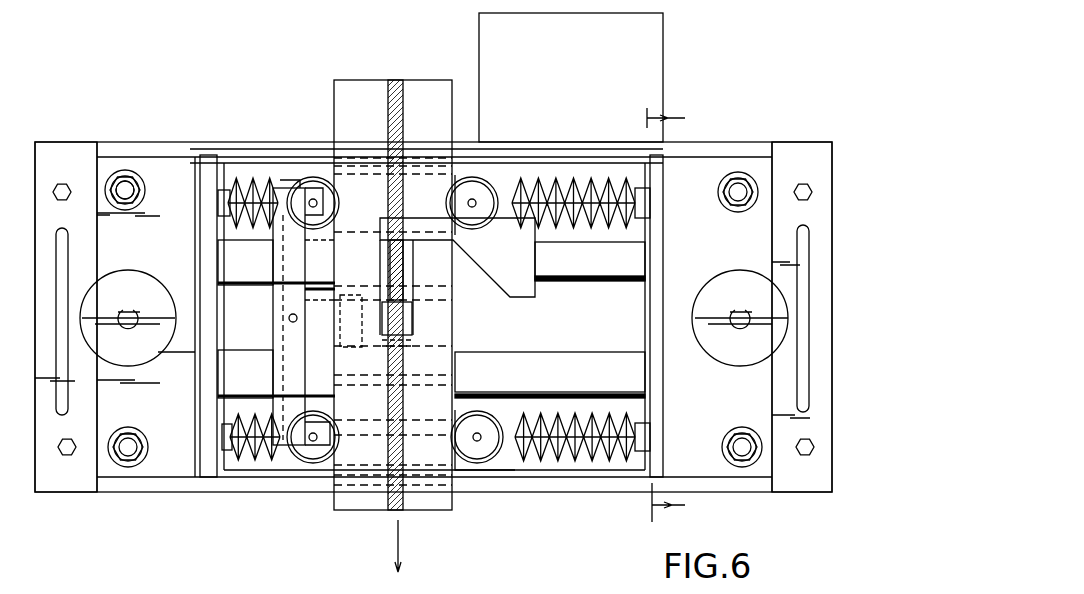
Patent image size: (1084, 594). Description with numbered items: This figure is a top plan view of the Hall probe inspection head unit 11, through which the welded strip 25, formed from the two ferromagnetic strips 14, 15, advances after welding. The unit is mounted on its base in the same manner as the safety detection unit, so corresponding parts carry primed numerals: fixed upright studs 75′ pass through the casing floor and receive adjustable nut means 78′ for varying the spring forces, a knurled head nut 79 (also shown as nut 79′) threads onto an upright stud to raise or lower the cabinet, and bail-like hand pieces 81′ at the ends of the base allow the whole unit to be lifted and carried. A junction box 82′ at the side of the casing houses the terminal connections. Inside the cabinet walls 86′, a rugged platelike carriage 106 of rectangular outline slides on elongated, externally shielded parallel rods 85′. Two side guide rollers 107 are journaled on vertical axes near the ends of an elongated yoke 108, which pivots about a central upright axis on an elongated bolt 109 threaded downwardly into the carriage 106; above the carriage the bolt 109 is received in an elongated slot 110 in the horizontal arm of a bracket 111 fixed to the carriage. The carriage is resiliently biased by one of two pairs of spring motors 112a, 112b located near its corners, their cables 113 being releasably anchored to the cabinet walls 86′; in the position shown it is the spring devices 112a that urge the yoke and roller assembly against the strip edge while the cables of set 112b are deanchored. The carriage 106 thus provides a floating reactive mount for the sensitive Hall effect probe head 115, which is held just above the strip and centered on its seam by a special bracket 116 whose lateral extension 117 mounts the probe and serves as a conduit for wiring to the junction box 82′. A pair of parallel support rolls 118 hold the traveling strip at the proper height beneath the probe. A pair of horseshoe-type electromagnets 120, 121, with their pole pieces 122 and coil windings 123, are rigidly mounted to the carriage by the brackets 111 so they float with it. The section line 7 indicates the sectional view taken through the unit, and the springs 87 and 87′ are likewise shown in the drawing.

The section line 7- 7 is at (673, 315).
The Hall inspection head unit 11 is at (774, 82).
The ferromagnetic strip 14 is at (353, 85).
The ferromagnetic strip 15 is at (425, 85).
The welded strip 25 is at (382, 512).
The fixed upright stud 75′ is at (118, 184).
The adjustable nut means 78′ is at (130, 186).
The knurled head nut 79 is at (740, 300).
The knurled head nut 79′ is at (113, 362).
The baillike hand piece 81′ is at (803, 330).
The junction box 82′ is at (663, 103).
The rod 85′ is at (555, 463).
The cabinet wall 86′ is at (210, 378).
The spring 87 is at (240, 462).
The compression spring 87′ is at (567, 180).
The carriage 106 is at (509, 479).
The side guide roller 107 is at (313, 177).
The yoke 108 is at (270, 312).
The bolt 109 is at (300, 318).
The slot 110 is at (517, 325).
The bracket 111 is at (540, 320).
The spring motors 112a is at (490, 190).
The spring motors 112b is at (335, 160).
The cable 113 is at (262, 176).
The Hall effect probe head 115 is at (470, 285).
The bracket 116 is at (530, 272).
The lateral extension 117 is at (383, 252).
The support roll 118 is at (240, 396).
The electromagnet 120 is at (325, 316).
The electromagnet 121 is at (492, 372).
The pole piece 122 is at (405, 300).
The coil winding 123 is at (410, 345).